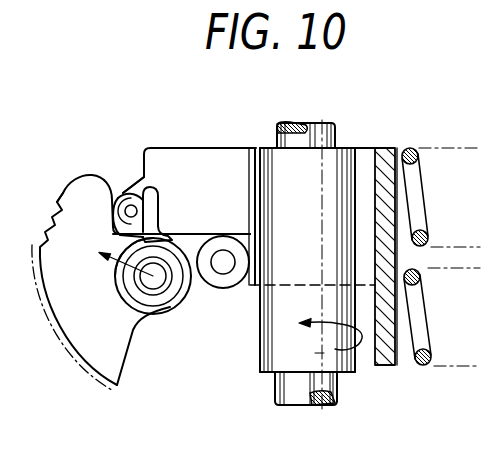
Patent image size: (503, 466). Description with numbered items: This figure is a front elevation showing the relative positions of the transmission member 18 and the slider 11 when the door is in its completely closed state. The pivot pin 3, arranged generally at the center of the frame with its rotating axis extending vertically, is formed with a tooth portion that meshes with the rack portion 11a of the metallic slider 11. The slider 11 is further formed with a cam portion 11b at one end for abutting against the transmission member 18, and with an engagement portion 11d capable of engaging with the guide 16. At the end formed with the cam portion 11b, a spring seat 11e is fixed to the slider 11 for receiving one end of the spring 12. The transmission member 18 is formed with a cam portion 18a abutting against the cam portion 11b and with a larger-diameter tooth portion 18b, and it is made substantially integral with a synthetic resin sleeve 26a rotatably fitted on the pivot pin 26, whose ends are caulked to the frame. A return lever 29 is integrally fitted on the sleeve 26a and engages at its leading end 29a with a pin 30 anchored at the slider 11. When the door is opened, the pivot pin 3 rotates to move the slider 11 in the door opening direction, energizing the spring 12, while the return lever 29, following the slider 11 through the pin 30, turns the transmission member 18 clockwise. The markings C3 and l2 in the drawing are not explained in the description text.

The pivot pin 3 is at (310, 136).
The slider 11 is at (207, 147).
The rack portion 11a is at (251, 147).
The cam portion 11b is at (118, 198).
The engagement portion 11d is at (238, 232).
The spring seat 11e is at (383, 157).
The spring 12 is at (417, 182).
The guide 16 is at (229, 288).
The transmission member 18 is at (120, 355).
The cam portion 18a is at (112, 228).
The tooth portion 18b is at (66, 353).
The pivot pin 26 is at (181, 311).
The sleeve 26a is at (128, 287).
The return lever 29 is at (160, 217).
The leading end 29a is at (156, 194).
The pin 30 is at (132, 204).
The contact point C3 is at (110, 197).
The distance l2 is at (99, 256).